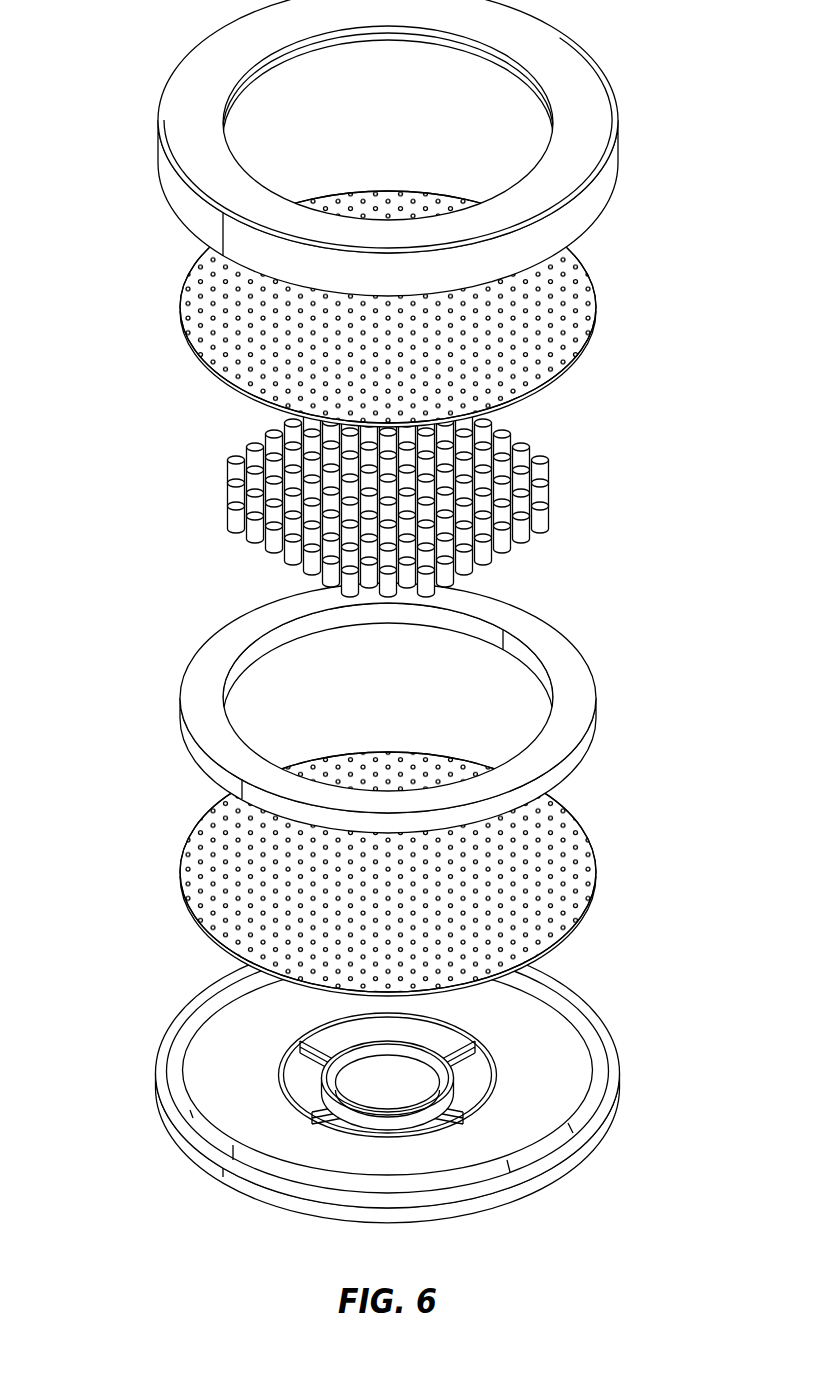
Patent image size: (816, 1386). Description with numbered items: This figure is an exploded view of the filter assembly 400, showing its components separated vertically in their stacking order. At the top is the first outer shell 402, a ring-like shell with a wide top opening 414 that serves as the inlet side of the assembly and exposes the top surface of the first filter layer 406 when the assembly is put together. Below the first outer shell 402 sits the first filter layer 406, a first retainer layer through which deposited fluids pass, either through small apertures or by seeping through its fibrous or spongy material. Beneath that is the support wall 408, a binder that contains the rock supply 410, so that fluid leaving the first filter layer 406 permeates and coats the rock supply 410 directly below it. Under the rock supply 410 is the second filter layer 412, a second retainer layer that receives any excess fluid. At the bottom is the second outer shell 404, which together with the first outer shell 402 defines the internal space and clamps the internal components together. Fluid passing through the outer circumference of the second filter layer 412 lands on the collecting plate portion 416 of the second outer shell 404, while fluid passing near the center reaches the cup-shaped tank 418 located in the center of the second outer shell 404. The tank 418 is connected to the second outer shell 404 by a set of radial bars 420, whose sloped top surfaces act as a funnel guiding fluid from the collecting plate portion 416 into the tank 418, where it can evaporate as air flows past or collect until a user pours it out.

The filter assembly 400 is at (102, 5).
The first outer shell 402 is at (431, 148).
The second outer shell 404 is at (618, 1081).
The first filter layer 406 is at (593, 306).
The support wall 408 is at (595, 707).
The rock supply 410 is at (582, 492).
The second filter layer 412 is at (595, 877).
The wide top opening 414 is at (352, 38).
The collecting plate portion 416 is at (542, 1045).
The tank 418 is at (417, 1088).
The radial bars 420 is at (318, 1114).